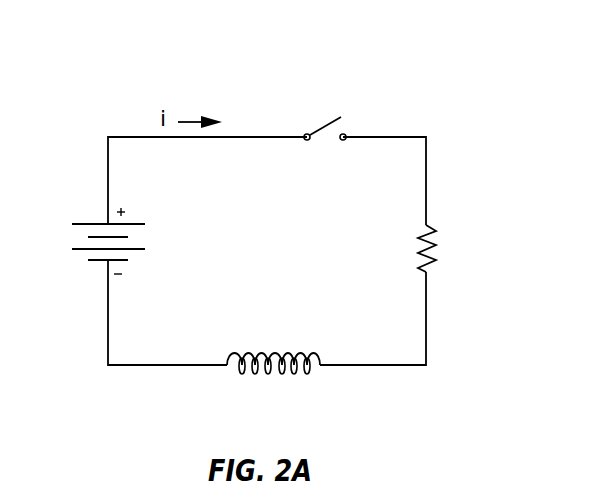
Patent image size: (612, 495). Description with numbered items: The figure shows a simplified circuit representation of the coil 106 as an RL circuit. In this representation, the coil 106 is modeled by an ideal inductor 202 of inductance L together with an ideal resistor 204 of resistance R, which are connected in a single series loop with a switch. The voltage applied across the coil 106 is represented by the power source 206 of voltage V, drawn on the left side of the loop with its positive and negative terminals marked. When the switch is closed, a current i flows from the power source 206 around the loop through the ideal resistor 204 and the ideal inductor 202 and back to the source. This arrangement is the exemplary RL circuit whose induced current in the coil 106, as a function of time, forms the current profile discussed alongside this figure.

The coil 106 is at (368, 105).
The power source 206 is at (121, 241).
The ideal resistor 204 is at (417, 248).
The ideal inductor 202 is at (273, 364).